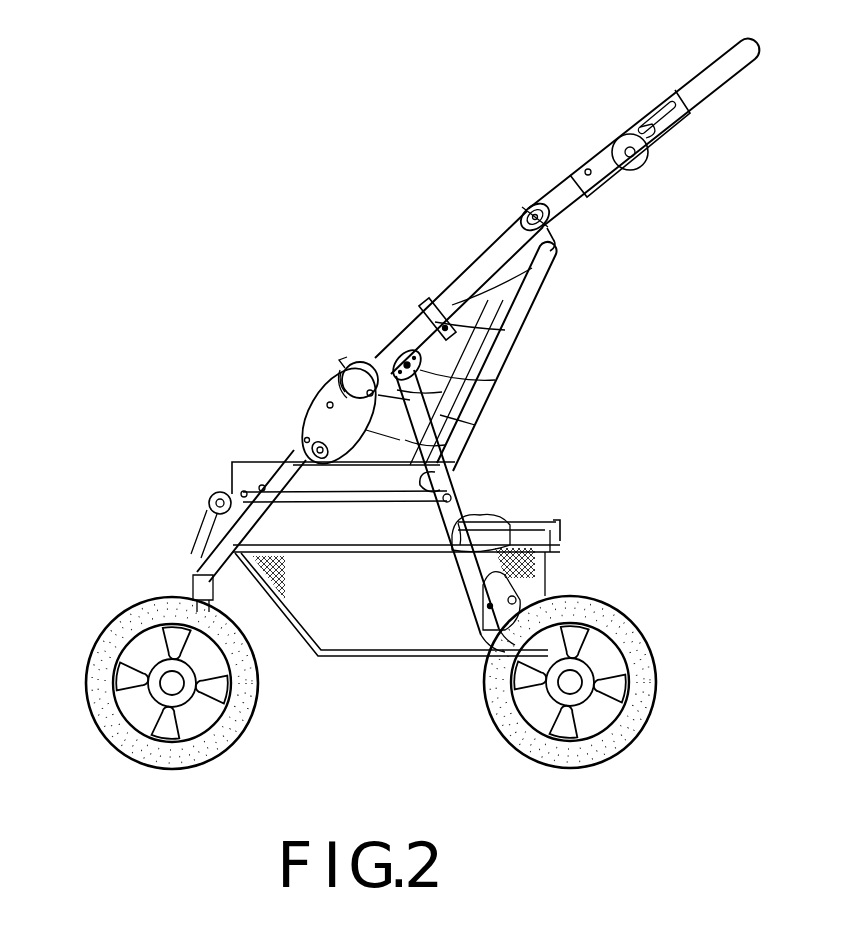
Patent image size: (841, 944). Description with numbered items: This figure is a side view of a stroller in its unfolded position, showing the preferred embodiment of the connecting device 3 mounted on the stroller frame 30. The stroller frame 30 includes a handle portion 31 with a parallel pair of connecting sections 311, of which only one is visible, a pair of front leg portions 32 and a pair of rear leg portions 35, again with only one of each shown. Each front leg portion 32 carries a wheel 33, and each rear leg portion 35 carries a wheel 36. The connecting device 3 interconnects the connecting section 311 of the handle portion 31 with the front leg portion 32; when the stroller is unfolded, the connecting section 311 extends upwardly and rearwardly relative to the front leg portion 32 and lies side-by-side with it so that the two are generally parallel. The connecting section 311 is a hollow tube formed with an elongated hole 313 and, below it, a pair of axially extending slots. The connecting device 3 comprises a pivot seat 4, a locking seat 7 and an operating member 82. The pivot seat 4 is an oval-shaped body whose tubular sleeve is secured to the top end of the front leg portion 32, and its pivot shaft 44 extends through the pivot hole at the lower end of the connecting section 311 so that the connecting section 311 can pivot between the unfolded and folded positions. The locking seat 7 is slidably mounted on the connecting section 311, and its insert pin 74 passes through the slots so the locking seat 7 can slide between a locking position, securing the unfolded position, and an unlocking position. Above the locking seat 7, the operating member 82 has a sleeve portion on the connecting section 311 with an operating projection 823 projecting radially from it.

The connecting device 3 is at (318, 364).
The pivot seat 4 is at (315, 425).
The locking seat 7 is at (358, 374).
The stroller frame 30 is at (452, 468).
The handle portion 31 is at (725, 72).
The front leg portion 32 is at (208, 560).
The wheel 33 is at (240, 712).
The rear leg portion 35 is at (442, 496).
The wheel 36 is at (628, 612).
The pivot shaft 44 is at (312, 455).
The insert pin 74 is at (405, 400).
The operating member 82 is at (537, 206).
The connecting section 311 is at (497, 254).
The elongated hole 313 is at (530, 200).
The operating projection 823 is at (560, 238).